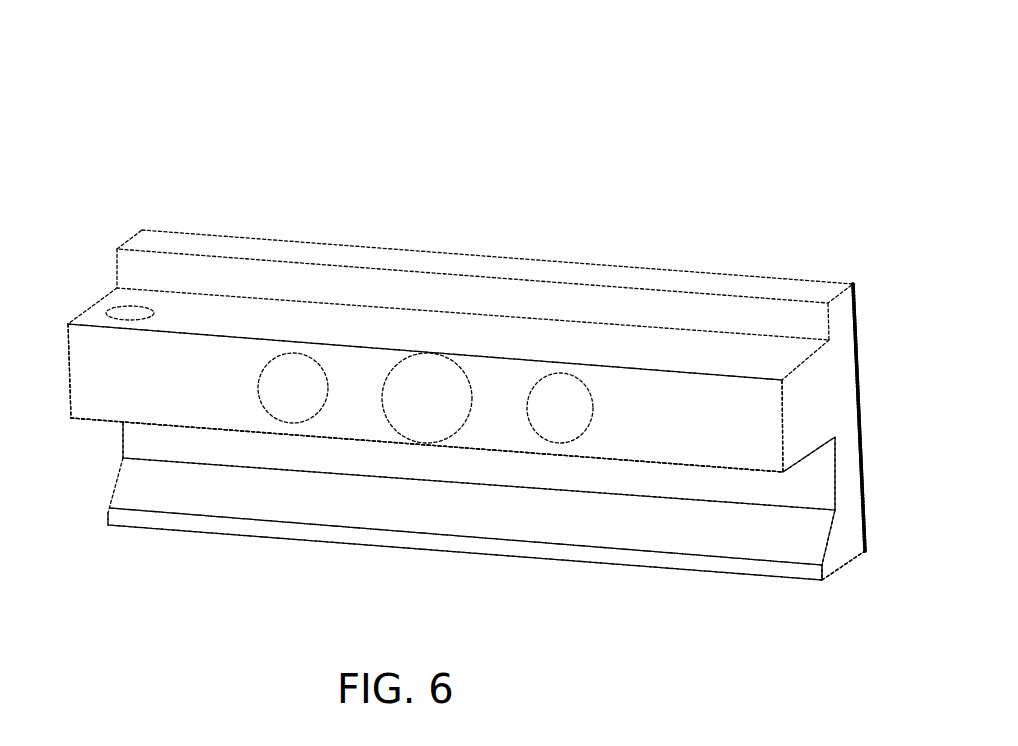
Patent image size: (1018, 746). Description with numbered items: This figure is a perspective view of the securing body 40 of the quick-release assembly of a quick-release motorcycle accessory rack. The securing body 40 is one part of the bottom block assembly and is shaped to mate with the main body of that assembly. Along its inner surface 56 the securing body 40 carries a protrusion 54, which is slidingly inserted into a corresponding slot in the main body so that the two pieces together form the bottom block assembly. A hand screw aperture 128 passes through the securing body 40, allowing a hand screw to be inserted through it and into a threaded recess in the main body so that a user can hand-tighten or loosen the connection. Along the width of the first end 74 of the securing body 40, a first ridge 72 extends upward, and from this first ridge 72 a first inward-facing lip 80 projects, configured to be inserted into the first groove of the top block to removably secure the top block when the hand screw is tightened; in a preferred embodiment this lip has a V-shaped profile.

The securing body 40 is at (315, 117).
The protrusion 54 is at (752, 418).
The inner surface 56 is at (792, 492).
The first ridge 72 is at (848, 547).
The first end 74 is at (848, 508).
The first inward-facing lip 80 is at (752, 568).
The hand screw aperture 128 is at (423, 405).